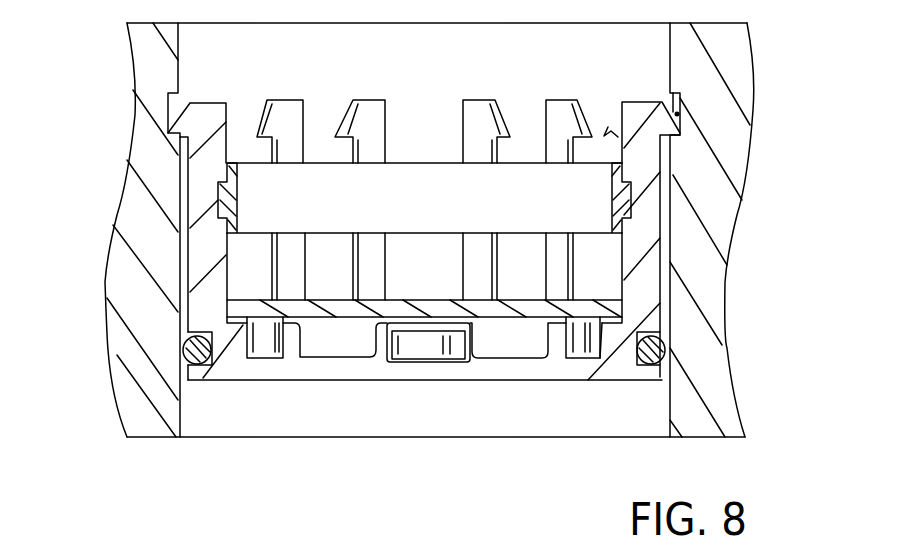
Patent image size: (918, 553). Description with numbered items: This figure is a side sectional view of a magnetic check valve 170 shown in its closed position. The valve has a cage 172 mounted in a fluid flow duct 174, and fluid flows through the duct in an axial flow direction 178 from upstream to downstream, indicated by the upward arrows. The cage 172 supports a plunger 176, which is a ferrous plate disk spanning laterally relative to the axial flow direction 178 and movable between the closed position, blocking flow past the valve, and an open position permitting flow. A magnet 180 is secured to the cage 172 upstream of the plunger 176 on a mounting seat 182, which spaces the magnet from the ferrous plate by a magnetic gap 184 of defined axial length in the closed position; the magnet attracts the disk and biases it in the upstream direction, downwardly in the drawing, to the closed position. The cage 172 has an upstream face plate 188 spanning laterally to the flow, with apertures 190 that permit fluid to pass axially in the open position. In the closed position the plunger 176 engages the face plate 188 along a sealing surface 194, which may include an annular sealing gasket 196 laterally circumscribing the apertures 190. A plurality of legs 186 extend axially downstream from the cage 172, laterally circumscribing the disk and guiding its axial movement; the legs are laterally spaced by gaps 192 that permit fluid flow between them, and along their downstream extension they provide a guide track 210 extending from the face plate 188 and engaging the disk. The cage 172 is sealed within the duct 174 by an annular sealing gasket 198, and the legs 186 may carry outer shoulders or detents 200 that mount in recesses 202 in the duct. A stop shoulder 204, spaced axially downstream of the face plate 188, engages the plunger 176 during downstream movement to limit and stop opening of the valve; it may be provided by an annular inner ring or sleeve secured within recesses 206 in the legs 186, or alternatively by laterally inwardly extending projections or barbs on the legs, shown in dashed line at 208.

The magnetic check valve 170 is at (103, 124).
The cage 172 is at (200, 246).
The fluid flow duct 174 is at (182, 430).
The plunger 176 is at (440, 300).
The axial flow direction 178 is at (335, 415).
The magnet 180 is at (422, 350).
The mounting seat 182 is at (472, 343).
The magnetic gap 184 is at (392, 320).
The legs 186 is at (291, 104).
The upstream face plate 188 is at (290, 370).
The apertures 190 is at (302, 362).
The gaps 192 is at (598, 123).
The sealing surface 194 is at (603, 328).
The annular sealing gasket 196 is at (585, 349).
The annular sealing gasket 198 is at (673, 352).
The outer shoulders or detents 200 is at (682, 133).
The detents or recesses 202 is at (678, 112).
The stop shoulder 204 is at (622, 207).
The recesses 206 is at (628, 184).
The projections or barbs 208 is at (608, 127).
The guide track 210 is at (270, 275).